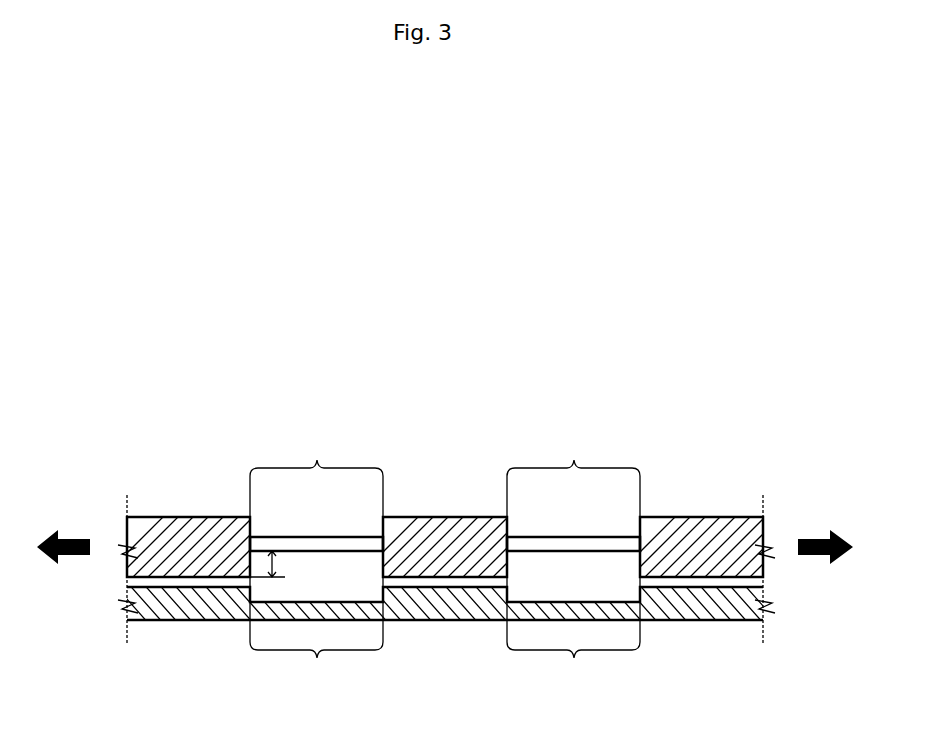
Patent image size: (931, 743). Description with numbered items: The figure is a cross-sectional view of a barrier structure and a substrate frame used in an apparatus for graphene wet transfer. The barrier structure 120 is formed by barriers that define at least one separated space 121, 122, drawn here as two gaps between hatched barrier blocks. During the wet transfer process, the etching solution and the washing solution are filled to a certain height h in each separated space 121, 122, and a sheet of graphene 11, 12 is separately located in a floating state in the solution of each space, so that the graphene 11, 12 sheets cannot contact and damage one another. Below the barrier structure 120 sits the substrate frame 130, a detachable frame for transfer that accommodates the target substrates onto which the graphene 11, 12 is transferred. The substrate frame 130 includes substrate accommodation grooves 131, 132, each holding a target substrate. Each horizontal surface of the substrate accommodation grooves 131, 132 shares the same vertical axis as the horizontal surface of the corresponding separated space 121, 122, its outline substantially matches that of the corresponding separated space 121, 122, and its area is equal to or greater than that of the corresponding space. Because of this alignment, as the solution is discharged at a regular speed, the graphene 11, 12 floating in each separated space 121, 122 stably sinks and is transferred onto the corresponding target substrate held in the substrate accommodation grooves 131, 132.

The graphene 11 is at (345, 537).
The graphene 12 is at (546, 537).
The barrier structure 120 is at (181, 517).
The separated space 121 is at (316, 546).
The separated space 122 is at (573, 546).
The substrate frame 130 is at (152, 620).
The substrate accommodation groove 131 is at (316, 644).
The substrate accommodation groove 132 is at (573, 644).
The height h is at (270, 565).